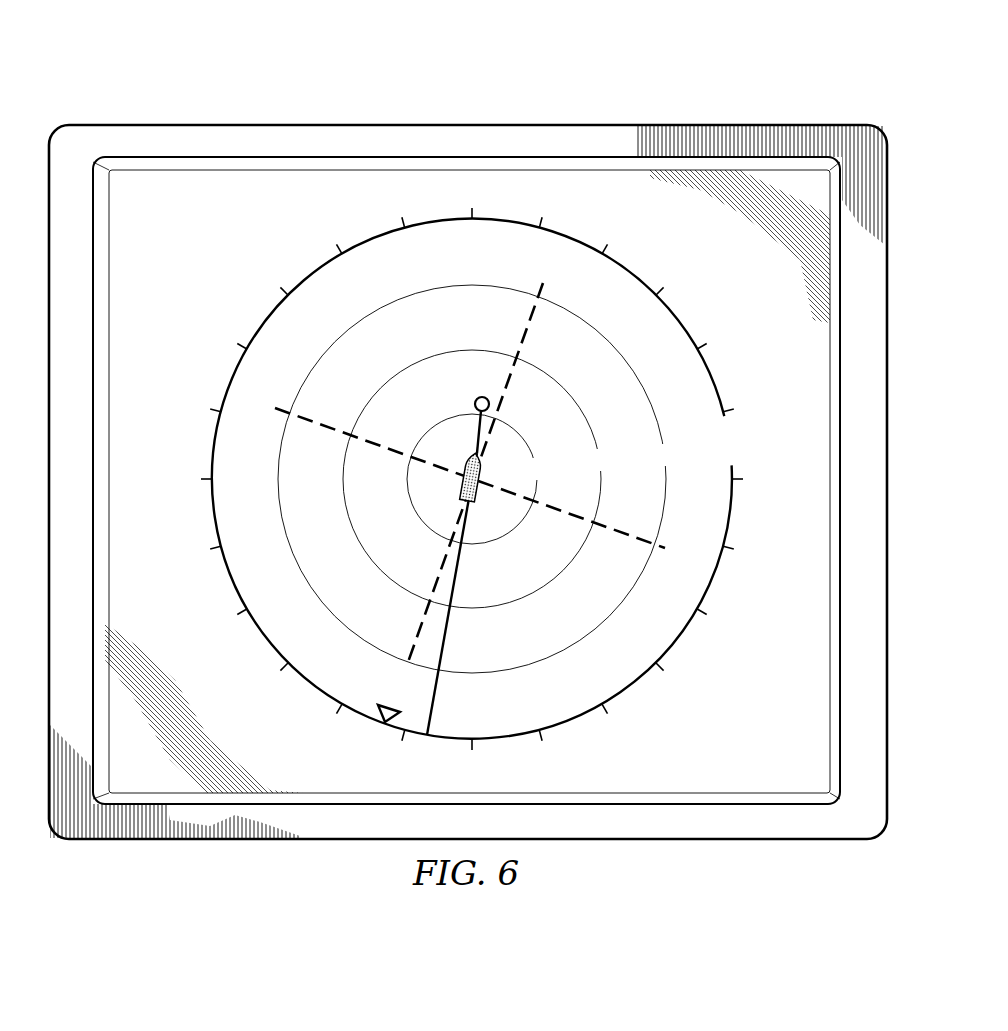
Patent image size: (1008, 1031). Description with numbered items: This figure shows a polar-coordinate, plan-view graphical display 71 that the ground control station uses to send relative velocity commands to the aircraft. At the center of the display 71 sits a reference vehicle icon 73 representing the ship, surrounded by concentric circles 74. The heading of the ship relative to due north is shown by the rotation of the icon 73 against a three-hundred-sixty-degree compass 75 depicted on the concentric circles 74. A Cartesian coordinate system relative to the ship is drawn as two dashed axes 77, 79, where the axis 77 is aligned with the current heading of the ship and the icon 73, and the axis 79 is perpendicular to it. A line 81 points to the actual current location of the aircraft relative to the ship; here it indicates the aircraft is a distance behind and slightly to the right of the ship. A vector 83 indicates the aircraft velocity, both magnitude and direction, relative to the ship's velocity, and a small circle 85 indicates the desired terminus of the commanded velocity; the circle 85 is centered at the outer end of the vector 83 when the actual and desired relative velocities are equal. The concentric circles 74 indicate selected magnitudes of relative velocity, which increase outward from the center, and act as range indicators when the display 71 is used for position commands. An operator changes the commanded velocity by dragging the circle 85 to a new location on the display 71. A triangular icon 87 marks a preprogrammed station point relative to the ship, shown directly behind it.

The graphical display 71 is at (376, 80).
The reference vehicle icon 73 is at (481, 497).
The concentric circles 74 is at (545, 581).
The compass 75 is at (317, 270).
The axis 77 is at (531, 335).
The axis 79 is at (325, 431).
The line 81 is at (449, 633).
The vector 83 is at (470, 440).
The small circle 85 is at (476, 400).
The triangular icon 87 is at (381, 704).